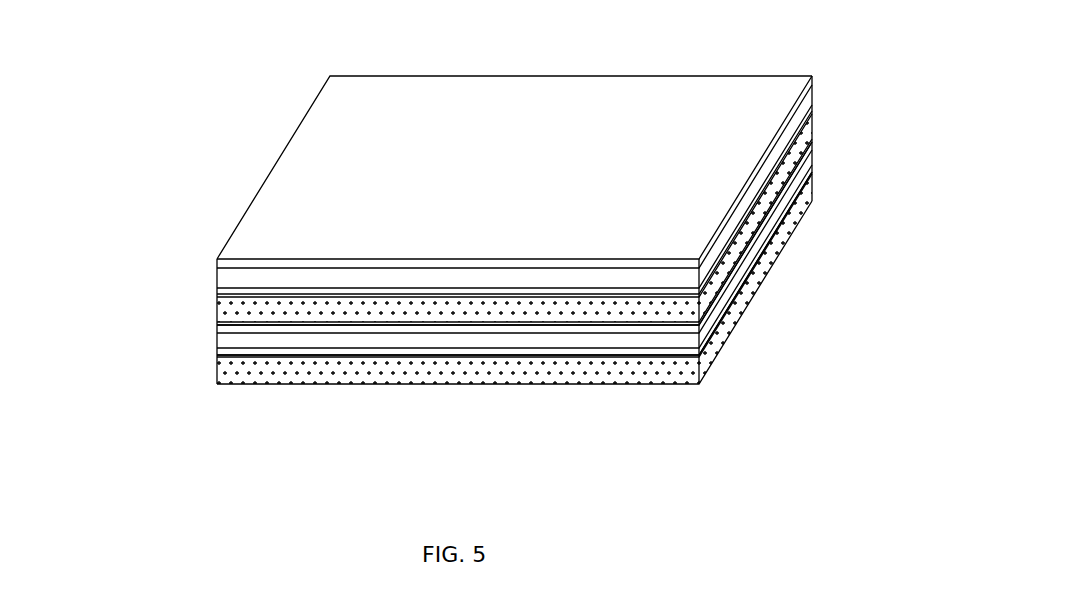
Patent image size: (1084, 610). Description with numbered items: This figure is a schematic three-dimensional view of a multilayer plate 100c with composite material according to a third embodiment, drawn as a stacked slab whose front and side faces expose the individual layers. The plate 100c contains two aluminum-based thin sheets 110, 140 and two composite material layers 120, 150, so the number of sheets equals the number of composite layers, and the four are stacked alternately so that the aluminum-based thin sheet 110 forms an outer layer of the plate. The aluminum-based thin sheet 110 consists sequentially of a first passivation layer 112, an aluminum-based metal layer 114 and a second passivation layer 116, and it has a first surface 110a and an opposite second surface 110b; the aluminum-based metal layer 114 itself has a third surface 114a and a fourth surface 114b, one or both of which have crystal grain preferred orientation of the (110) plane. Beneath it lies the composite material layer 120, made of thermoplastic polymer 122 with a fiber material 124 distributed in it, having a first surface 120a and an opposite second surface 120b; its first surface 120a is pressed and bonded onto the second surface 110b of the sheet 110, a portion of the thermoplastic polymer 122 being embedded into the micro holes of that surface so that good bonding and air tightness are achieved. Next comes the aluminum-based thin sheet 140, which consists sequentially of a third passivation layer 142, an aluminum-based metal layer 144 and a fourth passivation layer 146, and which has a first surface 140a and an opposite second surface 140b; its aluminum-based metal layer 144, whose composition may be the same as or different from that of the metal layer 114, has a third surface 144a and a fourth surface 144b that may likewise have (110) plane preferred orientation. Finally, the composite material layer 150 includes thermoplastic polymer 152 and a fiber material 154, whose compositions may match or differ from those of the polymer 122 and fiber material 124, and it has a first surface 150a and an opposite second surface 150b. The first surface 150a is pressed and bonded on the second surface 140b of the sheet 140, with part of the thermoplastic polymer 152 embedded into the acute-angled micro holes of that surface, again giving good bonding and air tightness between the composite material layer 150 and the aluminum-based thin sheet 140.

The multilayer plate with composite material 100c is at (214, 88).
The aluminum-based thin sheet 110 is at (128, 193).
The first surface 110a is at (327, 259).
The second surface 110b is at (228, 299).
The first passivation layer 112 is at (255, 265).
The aluminum-based metal layer 114 is at (237, 282).
The third surface 114a is at (301, 272).
The fourth surface 114b is at (267, 290).
The second passivation layer 116 is at (222, 291).
The composite material layer 120 is at (884, 223).
The first surface 120a is at (640, 297).
The second surface 120b is at (660, 326).
The thermoplastic polymer 122 is at (704, 309).
The fiber material 124 is at (704, 323).
The aluminum-based thin sheet 140 is at (884, 322).
The first surface 140a is at (578, 326).
The second surface 140b is at (557, 358).
The third passivation layer 142 is at (704, 329).
The aluminum-based metal layer 144 is at (704, 341).
The third surface 144a is at (637, 334).
The fourth surface 144b is at (615, 349).
The fourth passivation layer 146 is at (704, 352).
The composite material layer 150 is at (128, 318).
The first surface 150a is at (401, 359).
The second surface 150b is at (344, 386).
The thermoplastic polymer 152 is at (232, 358).
The fiber material 154 is at (240, 373).